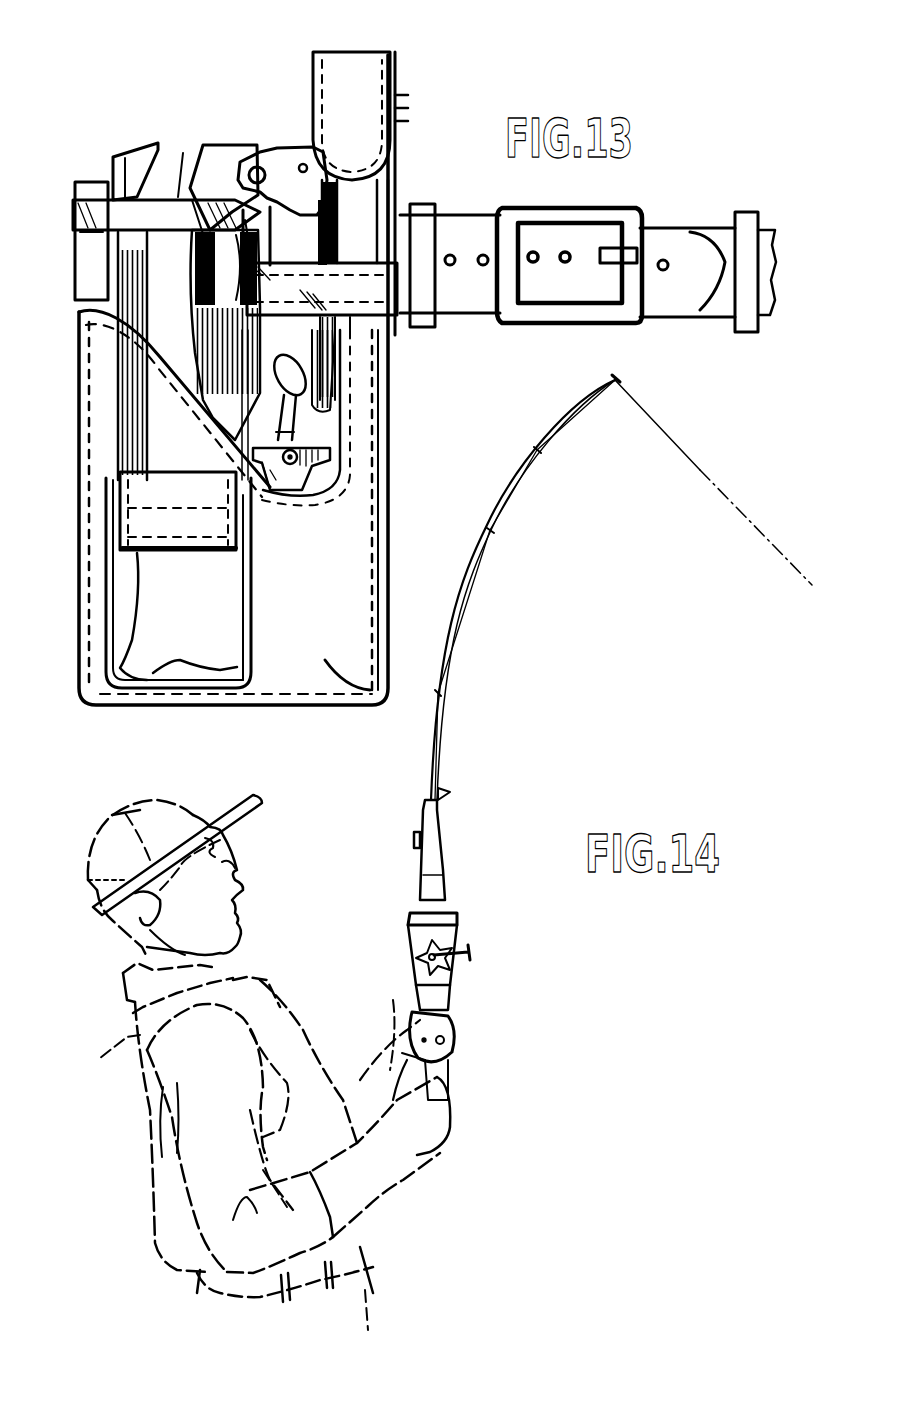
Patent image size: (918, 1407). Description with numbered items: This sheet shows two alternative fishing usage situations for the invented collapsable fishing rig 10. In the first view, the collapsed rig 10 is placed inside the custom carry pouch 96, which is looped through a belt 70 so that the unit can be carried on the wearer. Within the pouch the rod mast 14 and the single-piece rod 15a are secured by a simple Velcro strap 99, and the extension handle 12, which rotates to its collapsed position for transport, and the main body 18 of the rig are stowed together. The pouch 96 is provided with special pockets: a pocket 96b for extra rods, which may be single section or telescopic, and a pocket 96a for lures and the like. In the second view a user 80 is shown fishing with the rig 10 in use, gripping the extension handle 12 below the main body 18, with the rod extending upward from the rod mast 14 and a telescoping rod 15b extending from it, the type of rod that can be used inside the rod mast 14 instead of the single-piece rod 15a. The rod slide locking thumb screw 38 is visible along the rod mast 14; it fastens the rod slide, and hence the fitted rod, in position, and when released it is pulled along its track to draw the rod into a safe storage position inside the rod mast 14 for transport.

In FIG. 13, the collapsable fishing rig 10 is at (243, 78).
In FIG. 14, the collapsable fishing rig 10 is at (497, 850).
In FIG. 13, the extension handle 12 is at (222, 148).
In FIG. 14, the extension handle 12 is at (450, 1050).
In FIG. 13, the rod mast 14 is at (103, 272).
In FIG. 13, the single-piece rod 15a is at (130, 148).
In FIG. 14, the telescoping rod 15b is at (537, 450).
In FIG. 13, the main body 18 is at (272, 150).
In FIG. 14, the rod slide locking thumb screw 38 is at (414, 840).
In FIG. 13, the belt 70 is at (675, 252).
In FIG. 14, the user 80 is at (140, 1035).
In FIG. 13, the carry pouch 96 is at (332, 601).
In FIG. 13, the special pocket 96a is at (165, 652).
In FIG. 13, the special pocket 96b is at (370, 435).
In FIG. 13, the Velcro strap 99 is at (165, 197).